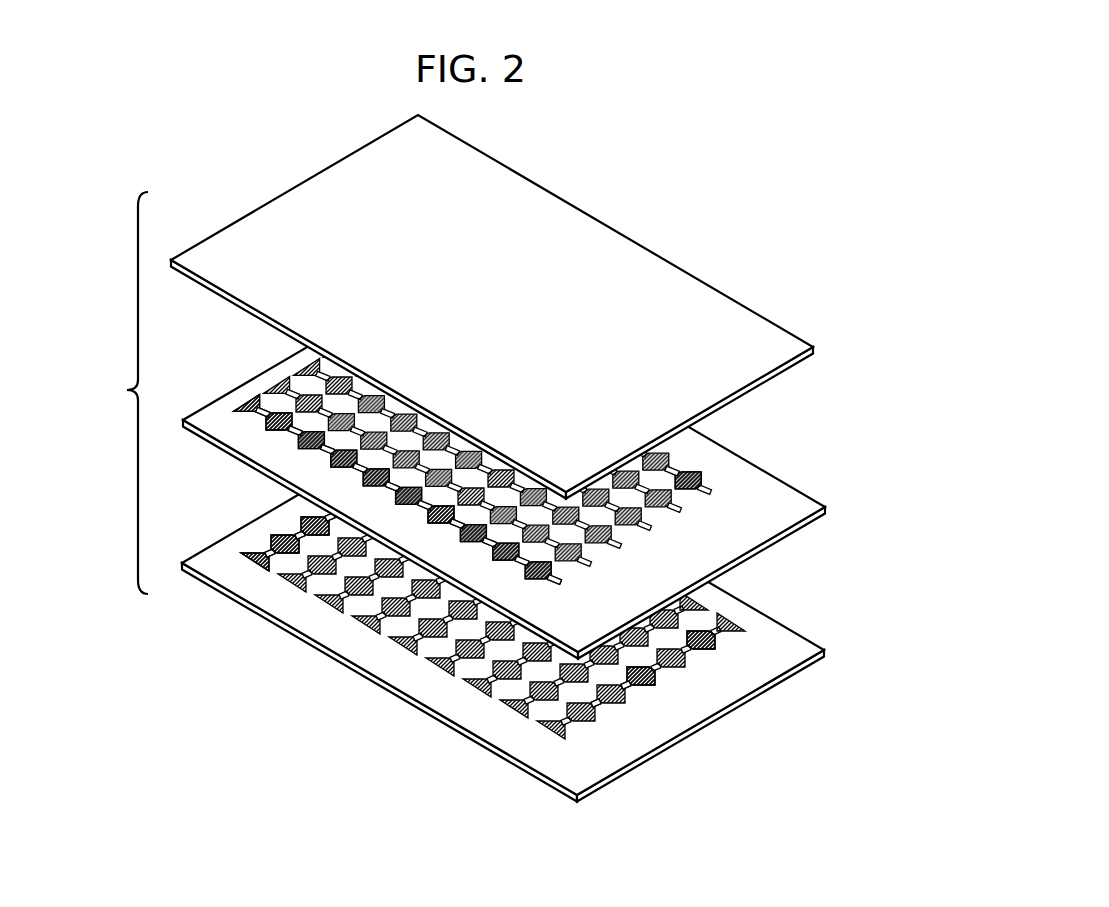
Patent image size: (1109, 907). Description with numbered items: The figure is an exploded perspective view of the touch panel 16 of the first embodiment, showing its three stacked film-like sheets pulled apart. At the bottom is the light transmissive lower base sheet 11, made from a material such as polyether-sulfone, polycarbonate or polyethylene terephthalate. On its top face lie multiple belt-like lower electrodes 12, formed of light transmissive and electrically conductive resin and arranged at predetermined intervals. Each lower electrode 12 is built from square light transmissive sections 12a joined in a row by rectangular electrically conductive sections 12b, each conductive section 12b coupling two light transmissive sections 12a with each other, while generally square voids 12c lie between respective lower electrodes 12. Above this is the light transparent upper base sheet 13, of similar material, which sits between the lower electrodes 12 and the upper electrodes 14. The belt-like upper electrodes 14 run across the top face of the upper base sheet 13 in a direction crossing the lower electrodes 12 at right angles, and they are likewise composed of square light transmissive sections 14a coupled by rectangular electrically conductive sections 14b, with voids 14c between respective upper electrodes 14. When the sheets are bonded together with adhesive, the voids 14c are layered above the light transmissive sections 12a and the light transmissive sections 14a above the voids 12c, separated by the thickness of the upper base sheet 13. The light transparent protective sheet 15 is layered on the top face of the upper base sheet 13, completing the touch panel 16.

The lower base sheet 11 is at (348, 665).
The lower electrodes 12 is at (498, 628).
The light transmissive sections 12a is at (703, 648).
The electrically conductive sections 12b is at (626, 680).
The voids 12c is at (283, 562).
The upper base sheet 13 is at (795, 531).
The upper electrodes 14 is at (538, 444).
The light transmissive sections 14a is at (678, 470).
The electrically conductive sections 14b is at (681, 470).
The voids 14c is at (305, 417).
The protective sheet 15 is at (648, 251).
The touch panel 16 is at (111, 404).